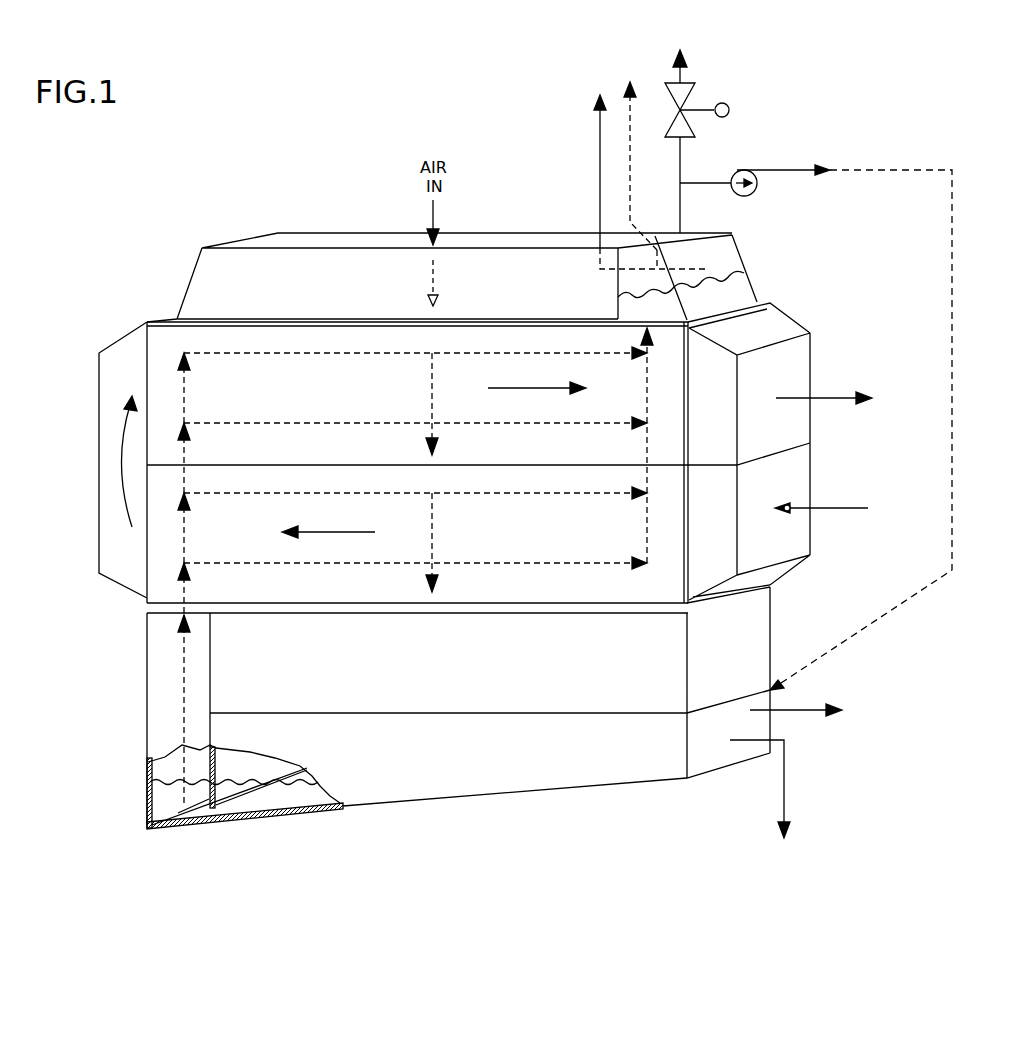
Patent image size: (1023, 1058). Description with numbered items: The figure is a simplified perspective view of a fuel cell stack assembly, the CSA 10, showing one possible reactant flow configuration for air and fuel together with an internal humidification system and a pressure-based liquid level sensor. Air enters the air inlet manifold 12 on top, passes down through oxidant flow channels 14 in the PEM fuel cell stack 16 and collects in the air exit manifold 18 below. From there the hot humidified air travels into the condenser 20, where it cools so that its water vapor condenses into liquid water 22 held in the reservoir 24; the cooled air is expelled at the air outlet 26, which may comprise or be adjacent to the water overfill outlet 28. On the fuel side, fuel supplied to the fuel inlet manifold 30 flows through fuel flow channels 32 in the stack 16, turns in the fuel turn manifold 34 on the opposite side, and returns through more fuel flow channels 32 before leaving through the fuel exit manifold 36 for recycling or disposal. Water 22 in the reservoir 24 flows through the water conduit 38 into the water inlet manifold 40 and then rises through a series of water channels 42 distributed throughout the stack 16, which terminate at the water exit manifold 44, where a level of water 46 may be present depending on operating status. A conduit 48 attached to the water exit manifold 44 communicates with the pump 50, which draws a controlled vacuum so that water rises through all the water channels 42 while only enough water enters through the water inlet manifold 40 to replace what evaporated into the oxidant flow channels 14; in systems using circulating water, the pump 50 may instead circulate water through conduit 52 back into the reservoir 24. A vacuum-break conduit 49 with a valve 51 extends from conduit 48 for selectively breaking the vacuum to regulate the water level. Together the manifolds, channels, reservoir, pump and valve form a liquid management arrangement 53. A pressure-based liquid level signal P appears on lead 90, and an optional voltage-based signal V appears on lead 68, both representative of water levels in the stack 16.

The CSA 10 is at (220, 203).
The air inlet manifold 12 is at (500, 237).
The oxidant flow channels 14 is at (432, 377).
The PEM fuel cell stack 16 is at (282, 458).
The air exit manifold 18 is at (510, 612).
The condenser 20 is at (444, 658).
The liquid water 22 is at (219, 786).
The reservoir 24 is at (444, 764).
The air outlet 26 is at (790, 708).
The water overfill outlet 28 is at (786, 813).
The fuel inlet manifold 30 is at (803, 491).
The fuel flow channels 32 is at (532, 387).
The fuel turn manifold 34 is at (112, 400).
The fuel exit manifold 36 is at (800, 378).
The water conduit 38 is at (151, 796).
The water inlet manifold 40 is at (160, 610).
The water channels 42 is at (300, 566).
The water exit manifold 44 is at (723, 261).
The water level 46 is at (632, 291).
The conduit 48 is at (680, 220).
The vacuum-break conduit 49 is at (680, 167).
The pump 50 is at (749, 193).
The vacuum-break valve 51 is at (687, 100).
The conduit 52 is at (952, 336).
The liquid management arrangement 53 is at (778, 156).
The lead 68 is at (633, 125).
The lead 90 is at (598, 150).